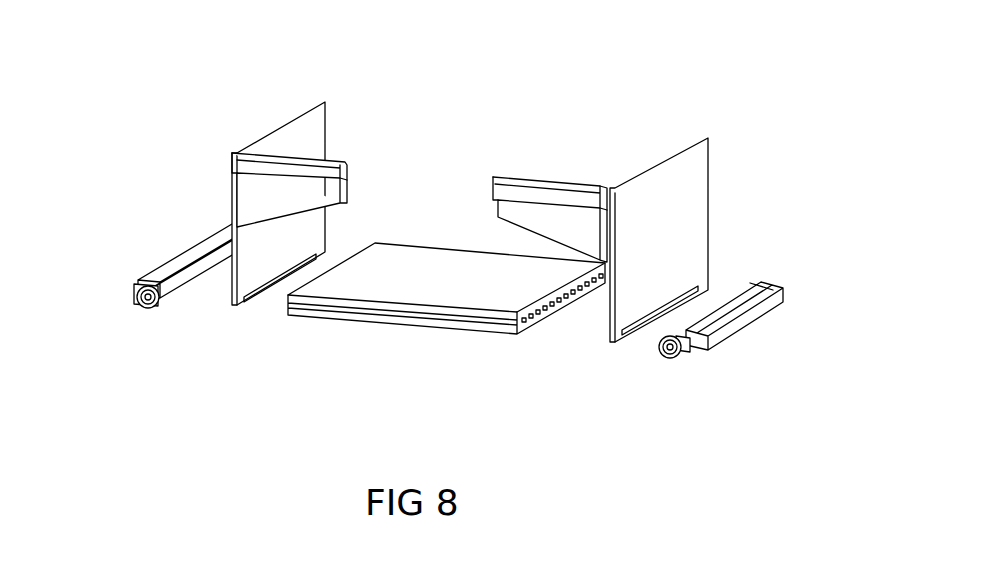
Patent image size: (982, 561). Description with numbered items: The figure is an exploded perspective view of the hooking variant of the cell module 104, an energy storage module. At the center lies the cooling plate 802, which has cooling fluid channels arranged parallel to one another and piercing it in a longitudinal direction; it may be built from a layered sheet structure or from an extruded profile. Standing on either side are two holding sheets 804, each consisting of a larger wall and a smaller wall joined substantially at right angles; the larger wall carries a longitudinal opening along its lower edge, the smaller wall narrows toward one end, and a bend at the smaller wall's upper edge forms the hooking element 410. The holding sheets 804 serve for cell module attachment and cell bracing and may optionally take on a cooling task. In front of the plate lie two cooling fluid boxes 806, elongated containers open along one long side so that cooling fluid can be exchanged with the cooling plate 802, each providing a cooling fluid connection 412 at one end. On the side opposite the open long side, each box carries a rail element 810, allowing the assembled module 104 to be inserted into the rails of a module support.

The cell module 104 is at (200, 100).
The cooling plate 802 is at (398, 322).
The holding sheet 804 is at (568, 182).
The hooking element 410 is at (492, 183).
The rail element 810 is at (197, 250).
The cooling fluid box 806 is at (130, 317).
The cooling fluid connection 412 is at (157, 307).